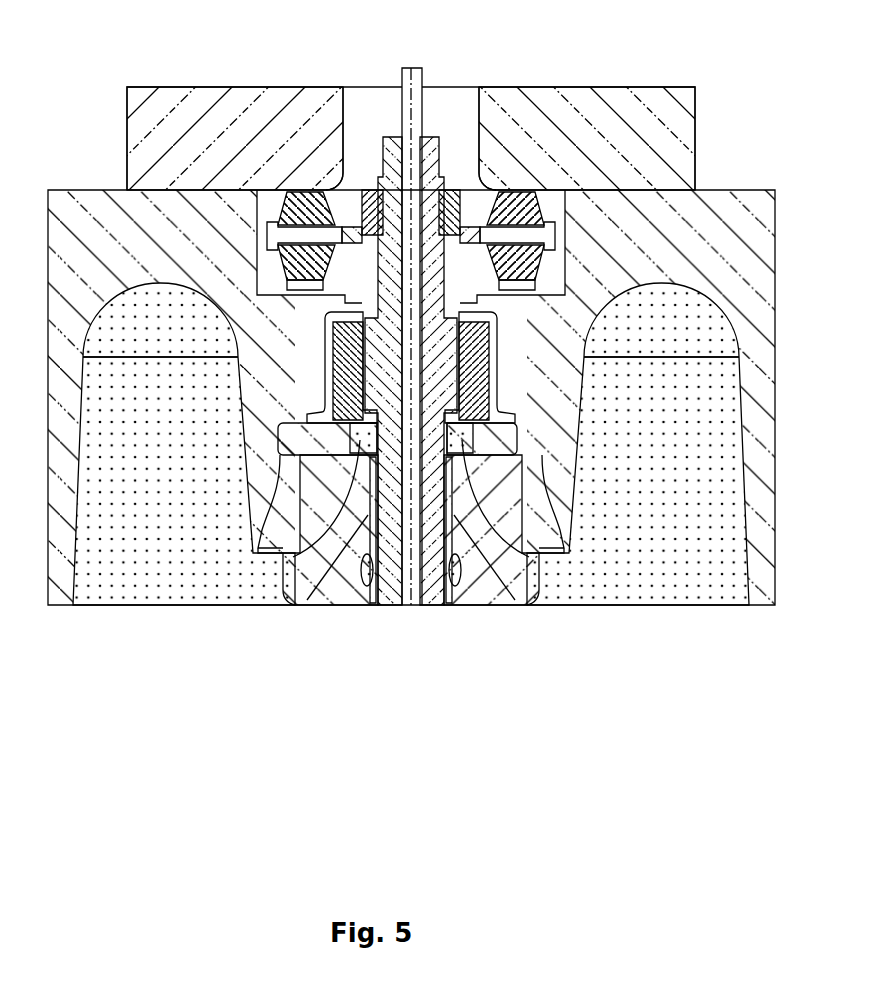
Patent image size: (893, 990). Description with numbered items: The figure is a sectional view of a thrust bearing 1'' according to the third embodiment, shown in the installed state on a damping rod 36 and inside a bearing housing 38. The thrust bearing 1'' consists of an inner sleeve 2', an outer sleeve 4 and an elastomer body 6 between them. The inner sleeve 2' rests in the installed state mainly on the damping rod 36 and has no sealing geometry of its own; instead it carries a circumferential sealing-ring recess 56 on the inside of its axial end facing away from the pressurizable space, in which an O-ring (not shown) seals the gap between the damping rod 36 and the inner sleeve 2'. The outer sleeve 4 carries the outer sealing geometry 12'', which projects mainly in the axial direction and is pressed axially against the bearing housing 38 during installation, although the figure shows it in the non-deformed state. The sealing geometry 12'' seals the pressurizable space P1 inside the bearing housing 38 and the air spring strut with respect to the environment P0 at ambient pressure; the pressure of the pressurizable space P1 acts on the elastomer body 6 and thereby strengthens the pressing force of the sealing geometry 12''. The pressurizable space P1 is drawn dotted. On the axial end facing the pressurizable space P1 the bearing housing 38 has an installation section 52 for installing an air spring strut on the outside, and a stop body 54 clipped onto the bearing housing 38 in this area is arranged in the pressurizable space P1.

The sealing-ring recess 56 is at (373, 337).
The outer sealing geometry 12'' is at (493, 233).
The bearing housing 38 is at (630, 253).
The environment P0 is at (340, 277).
The thrust bearing 1'' is at (282, 312).
The pressurizable space P1 is at (188, 532).
The installation section 52 is at (60, 567).
The stop body 54 is at (330, 587).
The damping rod 36 is at (433, 585).
The inner sleeve 2' is at (464, 593).
The elastomer body 6 is at (580, 518).
The outer sleeve 4 is at (577, 517).